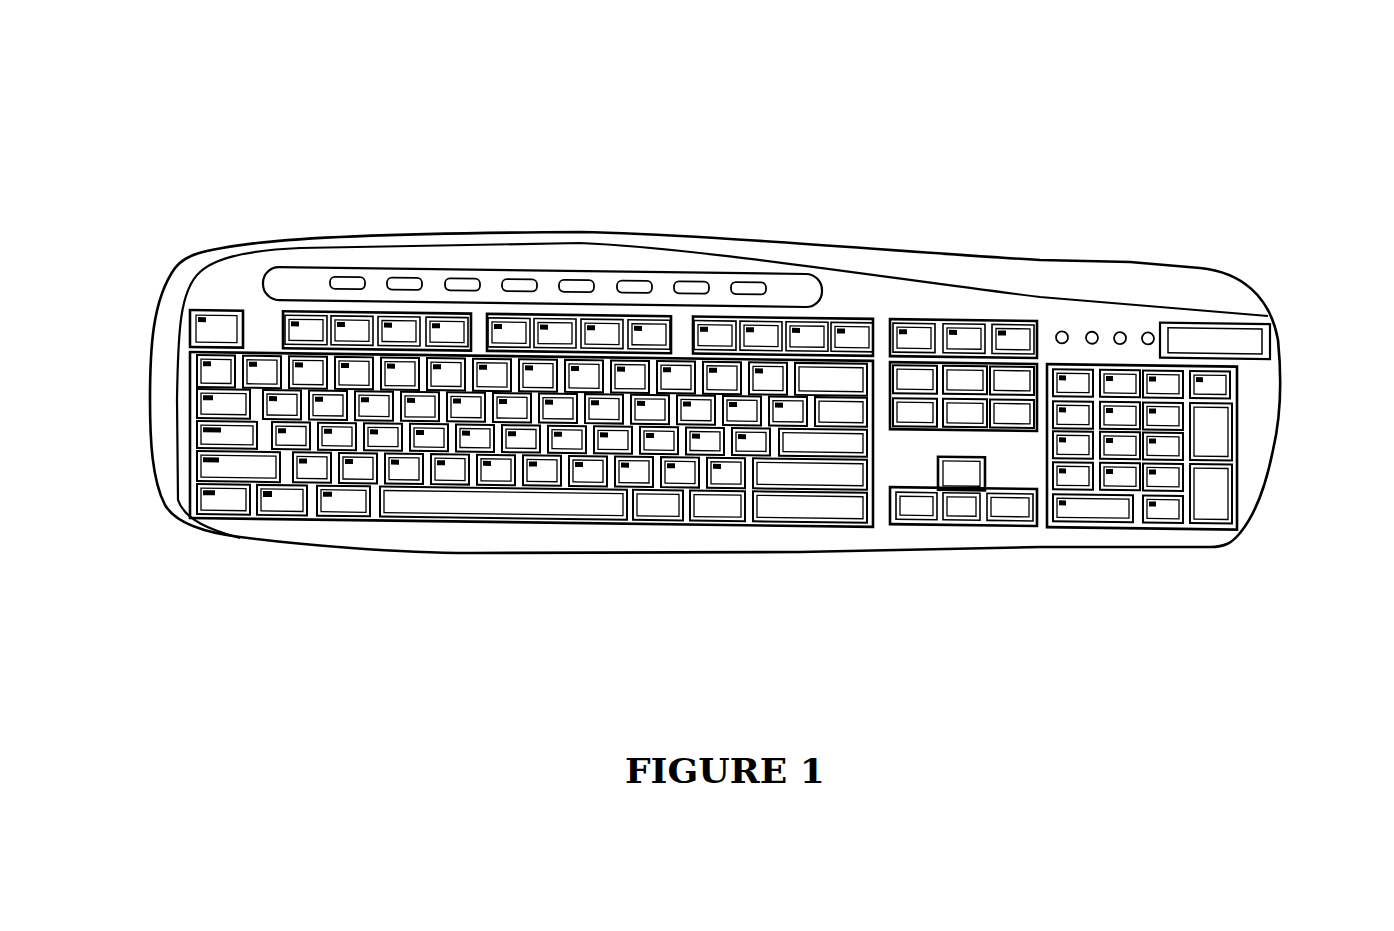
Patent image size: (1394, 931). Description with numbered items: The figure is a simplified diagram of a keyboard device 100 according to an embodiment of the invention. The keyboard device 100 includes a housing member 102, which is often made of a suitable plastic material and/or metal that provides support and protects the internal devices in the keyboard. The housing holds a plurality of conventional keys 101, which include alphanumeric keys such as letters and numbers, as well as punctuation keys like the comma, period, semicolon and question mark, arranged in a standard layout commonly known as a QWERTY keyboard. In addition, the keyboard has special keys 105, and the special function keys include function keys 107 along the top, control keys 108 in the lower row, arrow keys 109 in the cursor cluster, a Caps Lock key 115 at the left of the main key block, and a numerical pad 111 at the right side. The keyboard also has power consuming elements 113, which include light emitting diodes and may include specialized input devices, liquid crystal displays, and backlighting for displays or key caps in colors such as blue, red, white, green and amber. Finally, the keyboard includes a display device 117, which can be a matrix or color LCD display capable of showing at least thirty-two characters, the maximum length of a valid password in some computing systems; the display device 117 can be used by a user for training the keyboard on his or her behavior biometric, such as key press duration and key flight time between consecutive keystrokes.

The keyboard device 100 is at (868, 184).
The conventional keys 101 is at (162, 515).
The housing member 102 is at (207, 256).
The special keys 105 is at (303, 322).
The function keys 107 is at (468, 268).
The control keys 108 is at (241, 500).
The arrow keys 109 is at (963, 505).
The numerical pad 111 is at (1128, 500).
The power consuming elements 113 is at (1098, 316).
The Caps Lock key 115 is at (195, 428).
The display device 117 is at (1250, 330).